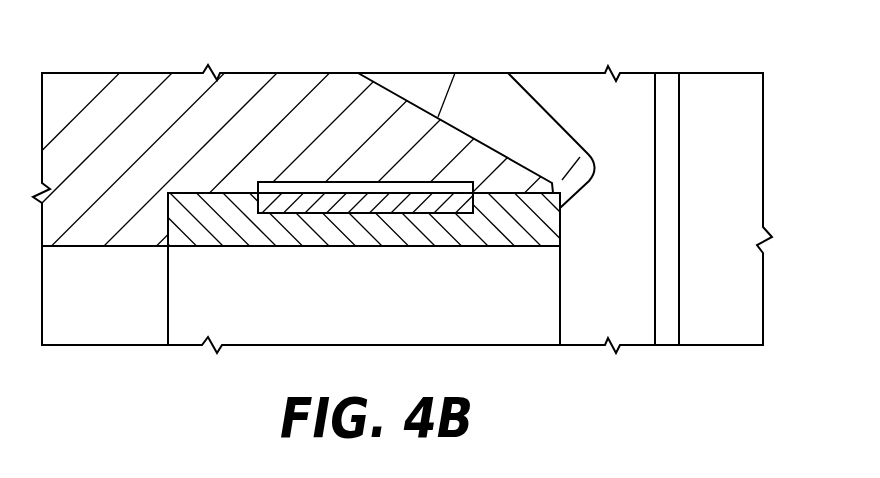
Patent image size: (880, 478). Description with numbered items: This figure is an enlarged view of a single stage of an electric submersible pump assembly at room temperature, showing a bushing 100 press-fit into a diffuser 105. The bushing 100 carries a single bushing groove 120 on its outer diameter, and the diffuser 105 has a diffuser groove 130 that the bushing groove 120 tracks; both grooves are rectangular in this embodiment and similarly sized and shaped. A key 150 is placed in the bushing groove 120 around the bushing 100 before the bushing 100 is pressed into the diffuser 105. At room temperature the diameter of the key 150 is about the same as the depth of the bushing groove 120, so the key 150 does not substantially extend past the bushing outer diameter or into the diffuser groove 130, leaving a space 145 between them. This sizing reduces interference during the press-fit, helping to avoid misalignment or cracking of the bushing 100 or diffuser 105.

The bushing 100 is at (506, 220).
The diffuser 105 is at (160, 120).
The bushing groove 120 is at (363, 215).
The diffuser groove 130 is at (318, 181).
The space 145 is at (358, 188).
The key 150 is at (417, 203).